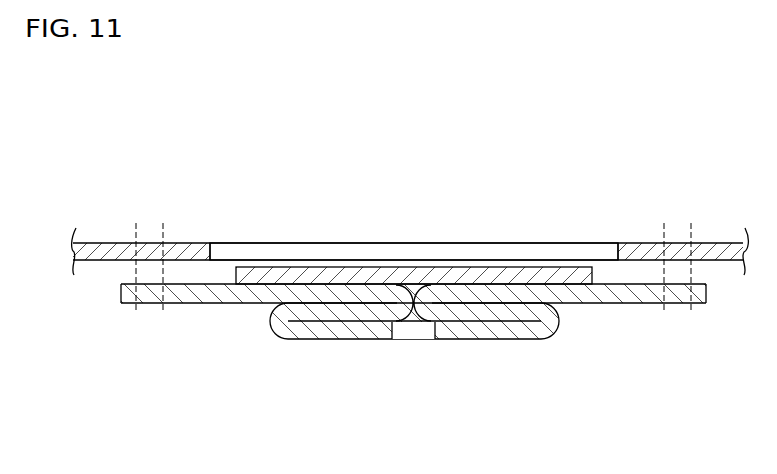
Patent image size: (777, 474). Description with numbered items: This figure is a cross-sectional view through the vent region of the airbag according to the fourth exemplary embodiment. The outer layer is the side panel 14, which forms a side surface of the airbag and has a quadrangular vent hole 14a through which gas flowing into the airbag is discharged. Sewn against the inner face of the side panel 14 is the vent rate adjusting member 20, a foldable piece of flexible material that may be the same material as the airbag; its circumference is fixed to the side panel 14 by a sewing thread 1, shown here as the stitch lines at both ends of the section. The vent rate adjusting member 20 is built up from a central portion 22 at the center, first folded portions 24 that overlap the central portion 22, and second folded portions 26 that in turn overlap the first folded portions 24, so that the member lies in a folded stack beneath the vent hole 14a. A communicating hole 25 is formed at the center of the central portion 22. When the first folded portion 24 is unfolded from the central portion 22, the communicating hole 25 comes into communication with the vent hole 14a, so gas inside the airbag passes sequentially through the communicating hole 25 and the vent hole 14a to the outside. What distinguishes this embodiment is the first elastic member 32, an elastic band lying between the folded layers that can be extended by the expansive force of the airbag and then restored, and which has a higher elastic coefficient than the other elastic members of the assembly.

The sewing thread 1 is at (163, 227).
The side panel 14 is at (92, 250).
The vent hole 14a is at (515, 254).
The first elastic member 32 is at (398, 276).
The vent rate adjusting member 20 is at (412, 379).
The central portion 22 is at (413, 383).
The first folded portion 24 is at (308, 311).
The communicating hole 25 is at (414, 331).
The second folded portion 26 is at (198, 293).